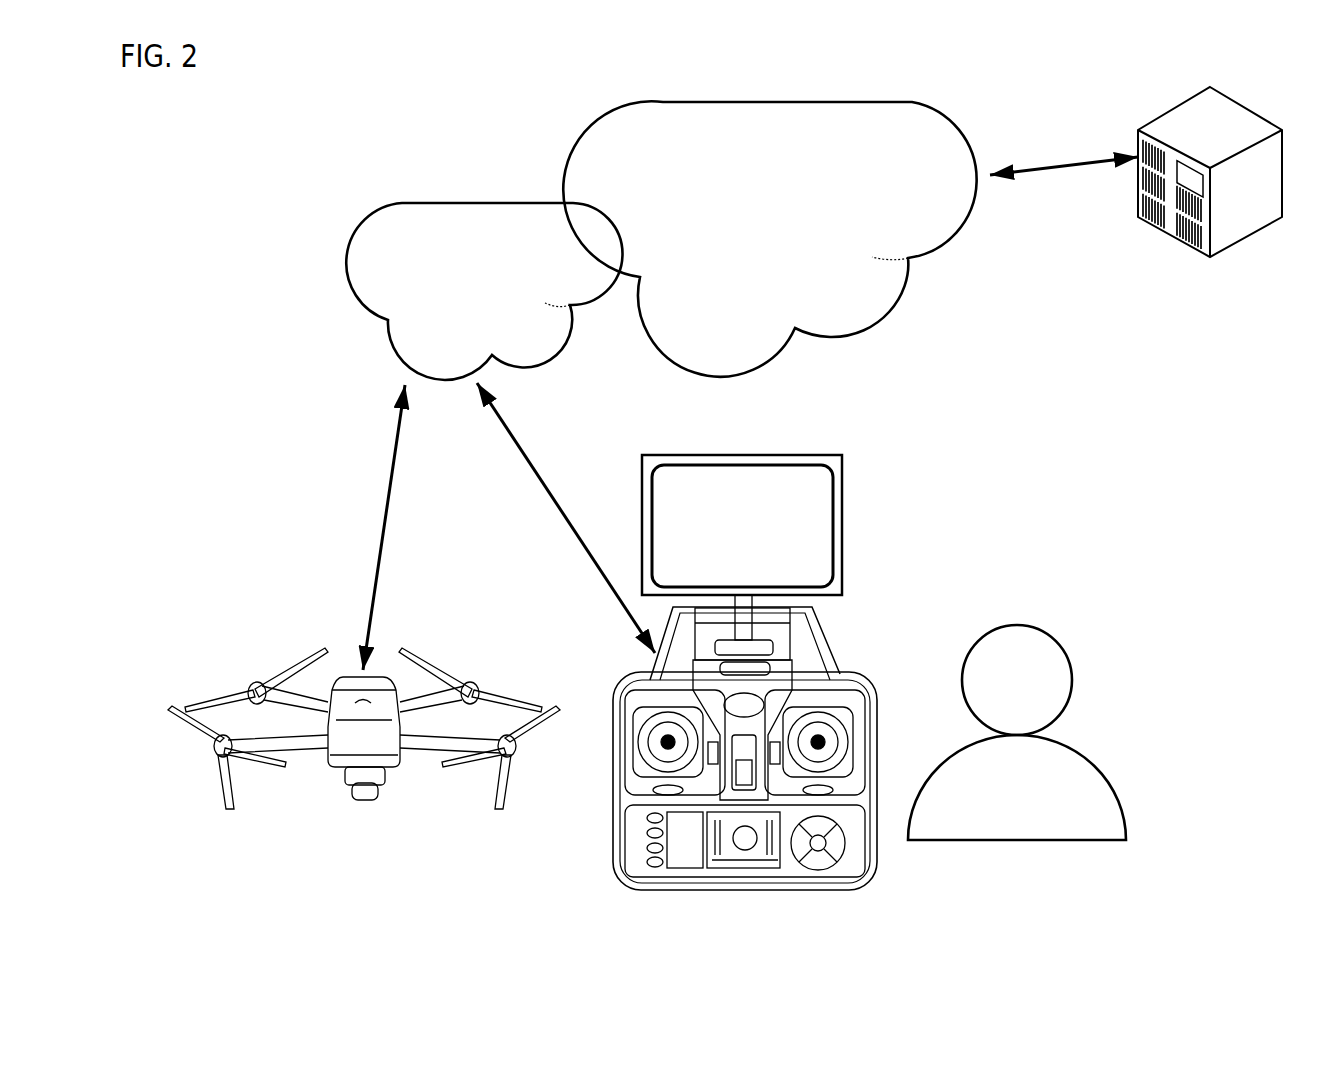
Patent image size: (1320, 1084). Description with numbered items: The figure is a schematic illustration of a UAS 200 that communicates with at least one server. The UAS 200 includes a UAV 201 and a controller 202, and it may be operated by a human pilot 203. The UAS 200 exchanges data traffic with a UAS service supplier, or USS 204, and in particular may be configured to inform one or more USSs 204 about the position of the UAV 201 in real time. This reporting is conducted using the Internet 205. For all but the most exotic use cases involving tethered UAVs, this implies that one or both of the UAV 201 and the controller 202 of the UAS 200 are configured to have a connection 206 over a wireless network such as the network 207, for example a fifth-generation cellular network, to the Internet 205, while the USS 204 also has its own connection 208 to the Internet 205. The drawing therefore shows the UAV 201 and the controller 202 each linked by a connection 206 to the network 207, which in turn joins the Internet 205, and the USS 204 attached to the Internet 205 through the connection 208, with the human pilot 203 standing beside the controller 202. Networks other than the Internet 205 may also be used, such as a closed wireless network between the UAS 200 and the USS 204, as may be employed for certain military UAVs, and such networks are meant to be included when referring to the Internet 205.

The UAS 200 is at (522, 708).
The UAV 201 is at (373, 803).
The controller 202 is at (622, 866).
The human pilot 203 is at (1057, 840).
The UAS service supplier (USS) 204 is at (1210, 257).
The Internet 205 is at (758, 266).
The connection 206 is at (385, 502).
The network 207 is at (501, 323).
The connection 208 is at (1037, 167).